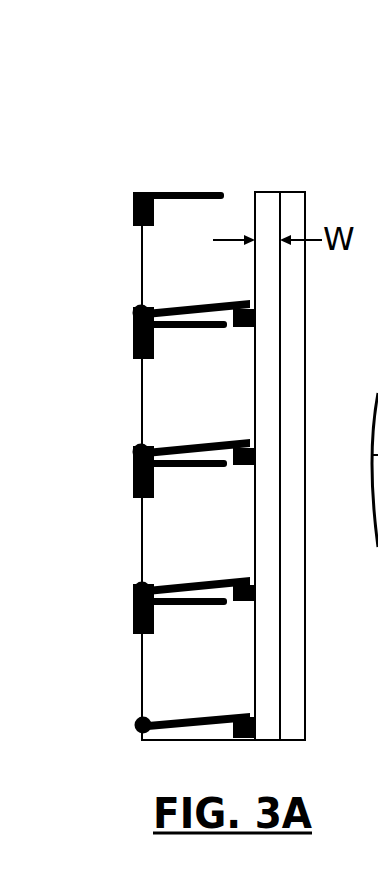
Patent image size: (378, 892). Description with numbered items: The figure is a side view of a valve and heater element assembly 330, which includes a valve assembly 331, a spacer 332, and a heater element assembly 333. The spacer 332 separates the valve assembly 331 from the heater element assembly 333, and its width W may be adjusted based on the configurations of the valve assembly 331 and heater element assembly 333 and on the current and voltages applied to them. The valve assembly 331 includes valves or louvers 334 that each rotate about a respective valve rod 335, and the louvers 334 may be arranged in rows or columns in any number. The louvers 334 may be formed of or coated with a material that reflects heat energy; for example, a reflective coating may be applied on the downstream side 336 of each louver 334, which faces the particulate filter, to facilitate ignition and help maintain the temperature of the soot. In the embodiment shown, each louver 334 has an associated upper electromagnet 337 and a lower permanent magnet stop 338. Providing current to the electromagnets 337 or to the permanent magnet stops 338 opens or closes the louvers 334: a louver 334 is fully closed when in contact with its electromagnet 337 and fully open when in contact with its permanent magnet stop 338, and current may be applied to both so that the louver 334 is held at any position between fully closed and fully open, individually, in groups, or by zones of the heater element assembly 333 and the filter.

The valve and heater element assembly 330 is at (152, 122).
The valve assembly 331 is at (138, 192).
The spacer 332 is at (262, 192).
The heater element assembly 333 is at (292, 192).
The louver 334 is at (168, 306).
The valve rod 335 is at (134, 310).
The downstream side of louver 336 is at (228, 326).
The upper electromagnet 337 is at (133, 211).
The lower permanent magnet stop 338 is at (257, 317).